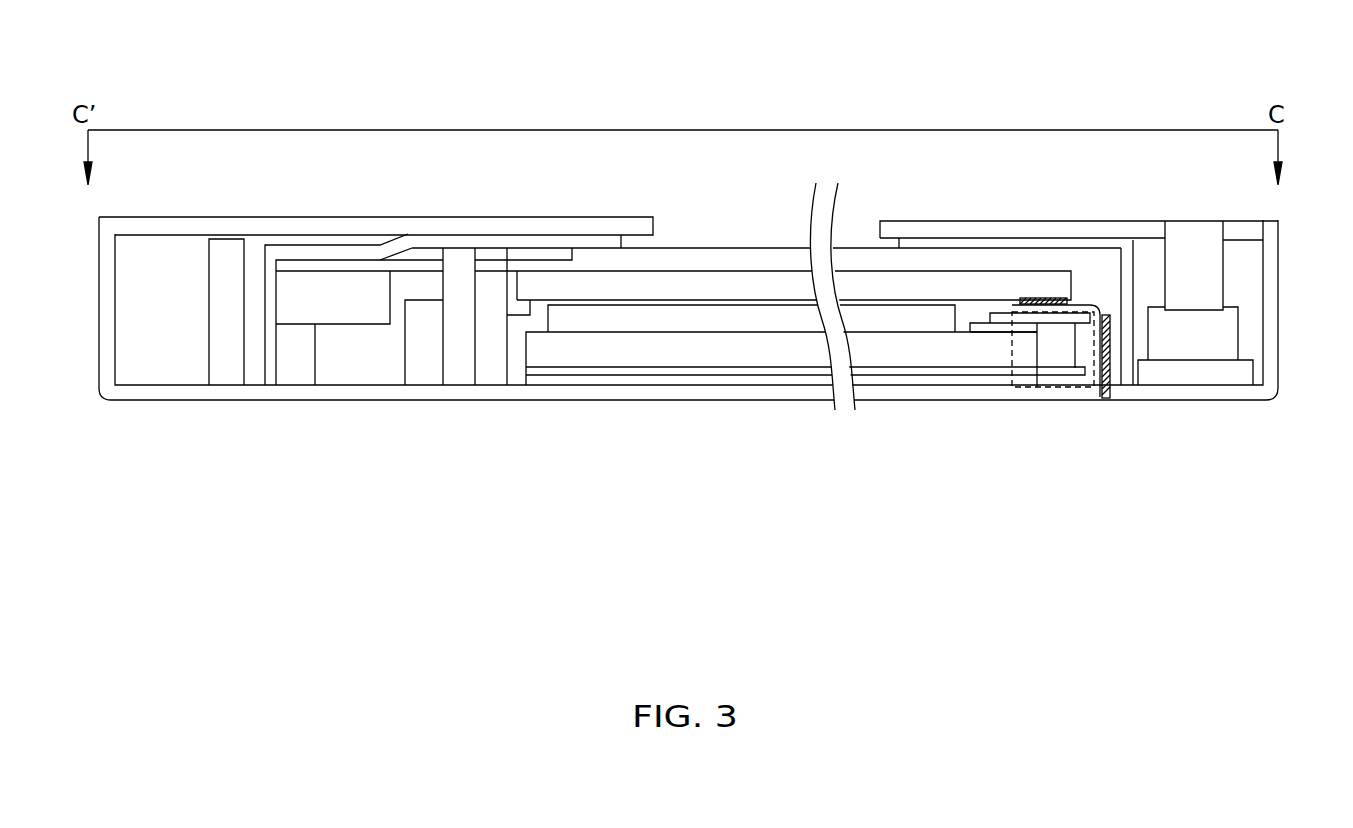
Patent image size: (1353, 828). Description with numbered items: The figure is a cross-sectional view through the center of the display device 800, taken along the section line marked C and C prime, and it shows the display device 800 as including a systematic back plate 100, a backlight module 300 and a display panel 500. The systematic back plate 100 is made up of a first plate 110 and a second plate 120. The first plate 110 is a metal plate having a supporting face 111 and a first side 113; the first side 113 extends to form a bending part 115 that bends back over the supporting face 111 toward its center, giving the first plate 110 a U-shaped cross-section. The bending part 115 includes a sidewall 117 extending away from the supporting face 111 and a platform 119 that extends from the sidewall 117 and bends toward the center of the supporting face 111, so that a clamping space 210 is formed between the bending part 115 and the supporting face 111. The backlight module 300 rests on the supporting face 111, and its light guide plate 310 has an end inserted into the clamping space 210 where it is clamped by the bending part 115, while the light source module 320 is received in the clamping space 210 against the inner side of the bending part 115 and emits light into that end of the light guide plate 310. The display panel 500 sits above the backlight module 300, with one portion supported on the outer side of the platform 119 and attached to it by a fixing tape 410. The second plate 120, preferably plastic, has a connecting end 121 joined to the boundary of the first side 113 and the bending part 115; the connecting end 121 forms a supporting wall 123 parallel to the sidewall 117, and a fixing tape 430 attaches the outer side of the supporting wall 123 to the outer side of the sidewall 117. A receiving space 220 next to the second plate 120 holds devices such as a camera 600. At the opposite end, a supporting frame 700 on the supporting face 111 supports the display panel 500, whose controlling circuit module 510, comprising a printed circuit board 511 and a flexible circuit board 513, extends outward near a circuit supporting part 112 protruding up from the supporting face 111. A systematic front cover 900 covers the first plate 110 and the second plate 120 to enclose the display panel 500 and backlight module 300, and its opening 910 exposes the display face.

The display device 800 is at (187, 33).
The systematic front cover 900 is at (348, 225).
The opening 910 is at (753, 205).
The supporting frame 700 is at (488, 290).
The controlling circuit module 510 is at (359, 418).
The printed circuit board 511 is at (354, 308).
The flexible circuit board 513 is at (421, 265).
The circuit supporting part 112 is at (455, 372).
The display panel 500 is at (857, 283).
The backlight module 300 is at (808, 438).
The light guide plate 310 is at (770, 355).
The light source module 320 is at (1050, 341).
The supporting face 111 is at (948, 387).
The clamping space 210 is at (1010, 355).
The fixing tape 410 is at (1025, 298).
The platform 119 is at (1055, 307).
The bending part 115 is at (1078, 300).
The sidewall 117 is at (1100, 310).
The fixing tape 430 is at (1105, 312).
The first side 113 is at (1098, 397).
The systematic back plate 100 is at (1151, 388).
The first plate 110 is at (1050, 393).
The second plate 120 is at (1208, 392).
The camera 600 is at (1207, 251).
The receiving space 220 is at (1258, 297).
The connecting end 121 is at (1113, 398).
The supporting wall 123 is at (1113, 325).